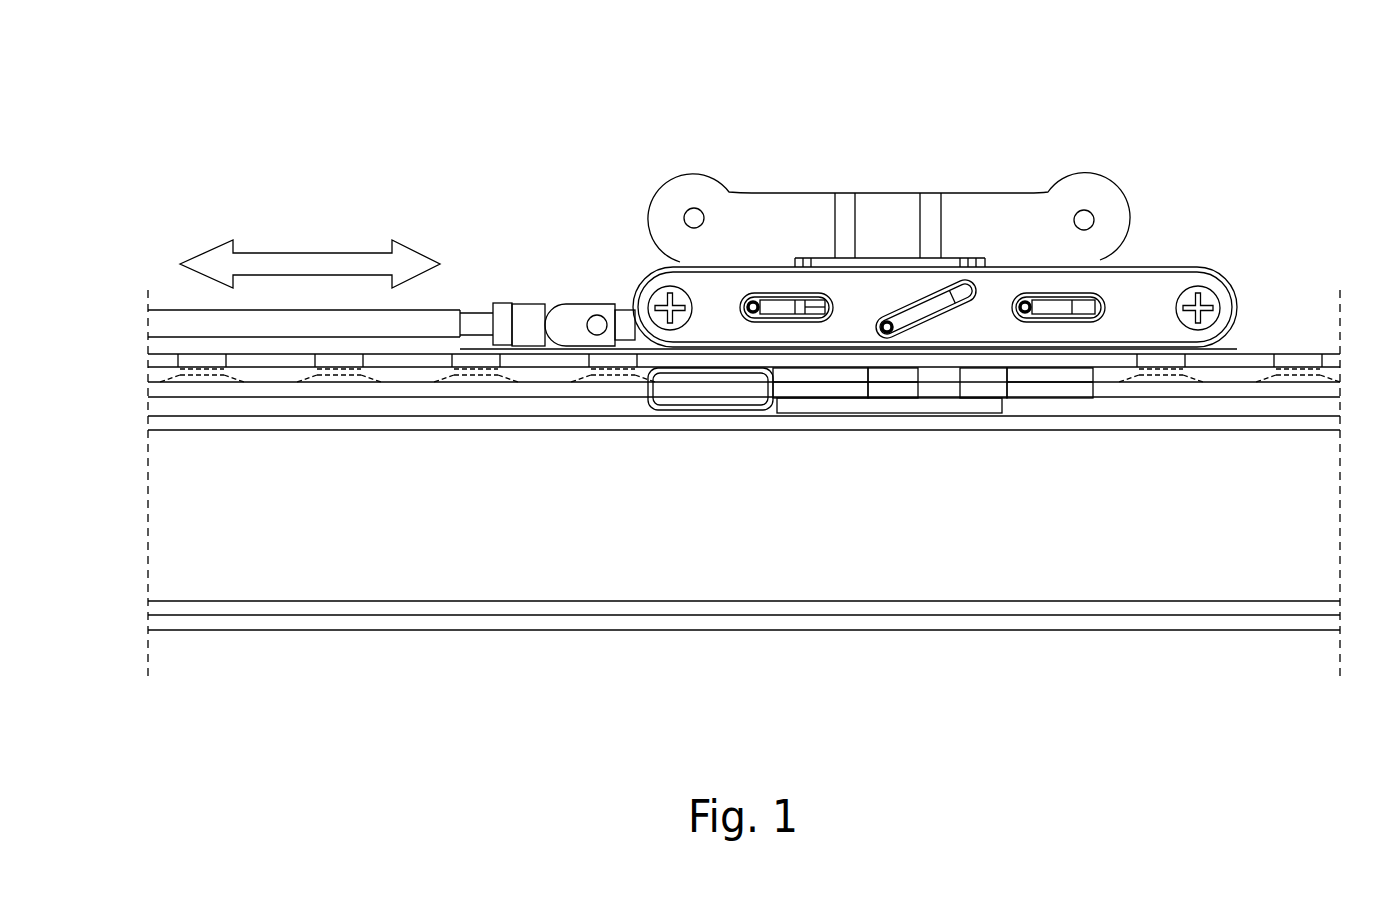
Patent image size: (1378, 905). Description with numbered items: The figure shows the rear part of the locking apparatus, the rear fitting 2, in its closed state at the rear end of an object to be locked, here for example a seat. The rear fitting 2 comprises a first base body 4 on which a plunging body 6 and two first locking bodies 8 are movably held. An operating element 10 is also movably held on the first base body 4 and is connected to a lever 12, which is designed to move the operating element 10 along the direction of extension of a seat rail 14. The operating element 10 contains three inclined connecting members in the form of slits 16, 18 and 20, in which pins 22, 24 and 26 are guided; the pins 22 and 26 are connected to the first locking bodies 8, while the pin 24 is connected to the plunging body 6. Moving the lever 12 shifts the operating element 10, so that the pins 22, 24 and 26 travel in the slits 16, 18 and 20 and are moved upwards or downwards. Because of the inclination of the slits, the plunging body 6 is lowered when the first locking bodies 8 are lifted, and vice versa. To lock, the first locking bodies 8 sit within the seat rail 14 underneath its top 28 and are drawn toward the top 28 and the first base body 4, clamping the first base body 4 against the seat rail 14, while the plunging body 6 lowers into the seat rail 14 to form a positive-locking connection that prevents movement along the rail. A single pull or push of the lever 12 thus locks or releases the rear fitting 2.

The rear fitting 2 is at (958, 88).
The first base body 4 is at (1110, 205).
The plunging body 6 is at (968, 363).
The first locking bodies 8 is at (722, 390).
The operating element 10 is at (1228, 290).
The lever 12 is at (500, 303).
The seat rail 14 is at (1305, 370).
The slit 16 is at (782, 300).
The slit 18 is at (905, 318).
The slit 20 is at (1048, 305).
The pin 22 is at (755, 312).
The pin 24 is at (893, 335).
The pin 26 is at (1105, 378).
The top 28 is at (1280, 350).